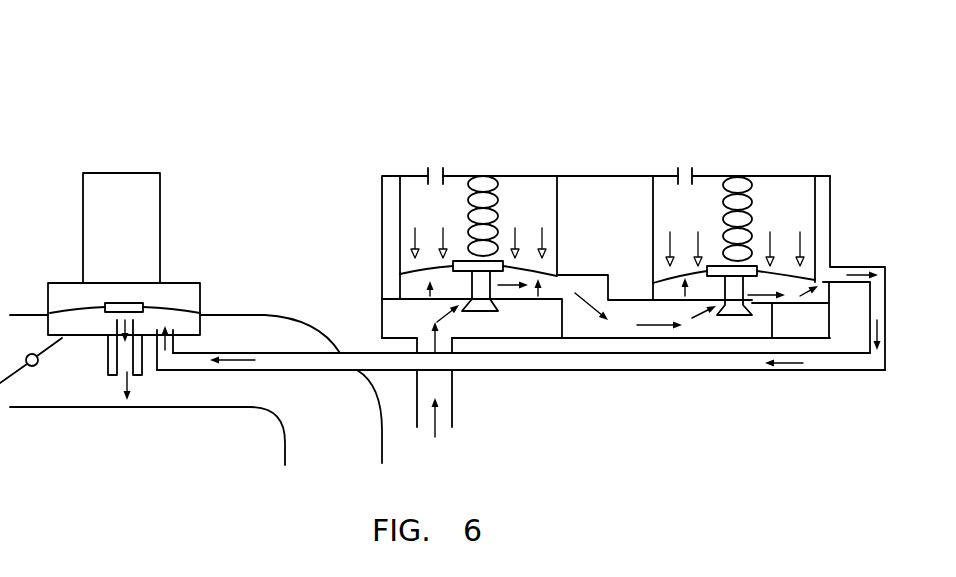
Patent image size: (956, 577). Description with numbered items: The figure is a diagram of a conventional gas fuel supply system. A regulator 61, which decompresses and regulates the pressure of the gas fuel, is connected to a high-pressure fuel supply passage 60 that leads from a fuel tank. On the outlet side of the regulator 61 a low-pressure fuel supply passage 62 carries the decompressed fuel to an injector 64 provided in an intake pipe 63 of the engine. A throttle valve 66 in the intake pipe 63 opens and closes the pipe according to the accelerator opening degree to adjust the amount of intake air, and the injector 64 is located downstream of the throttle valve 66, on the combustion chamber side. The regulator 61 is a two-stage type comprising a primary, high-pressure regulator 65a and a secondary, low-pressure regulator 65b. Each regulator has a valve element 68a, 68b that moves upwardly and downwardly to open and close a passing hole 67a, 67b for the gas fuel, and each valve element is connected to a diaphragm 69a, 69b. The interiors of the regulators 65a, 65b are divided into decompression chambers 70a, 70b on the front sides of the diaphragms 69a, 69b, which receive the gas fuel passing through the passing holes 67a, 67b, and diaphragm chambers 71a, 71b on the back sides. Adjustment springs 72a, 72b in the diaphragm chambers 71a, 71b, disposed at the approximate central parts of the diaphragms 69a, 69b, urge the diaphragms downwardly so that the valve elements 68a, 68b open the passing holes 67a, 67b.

The high-pressure fuel supply passage 60 is at (452, 410).
The regulator 61 is at (589, 238).
The low-pressure fuel supply passage 62 is at (643, 372).
The intake pipe 63 is at (177, 408).
The injector 64 is at (97, 172).
The primary regulator 65a is at (530, 176).
The secondary regulator 65b is at (798, 176).
The throttle valve 66 is at (18, 368).
The passing hole 67a is at (503, 305).
The passing hole 67b is at (752, 308).
The valve element 68a is at (478, 313).
The valve element 68b is at (730, 318).
The diaphragm 69a is at (403, 273).
The diaphragm 69b is at (807, 277).
The decompression chamber 70a is at (416, 284).
The decompression chamber 70b is at (660, 287).
The diaphragm chamber 71a is at (510, 205).
The diaphragm chamber 71b is at (762, 207).
The adjustment spring 72a is at (489, 176).
The adjustment spring 72b is at (749, 176).